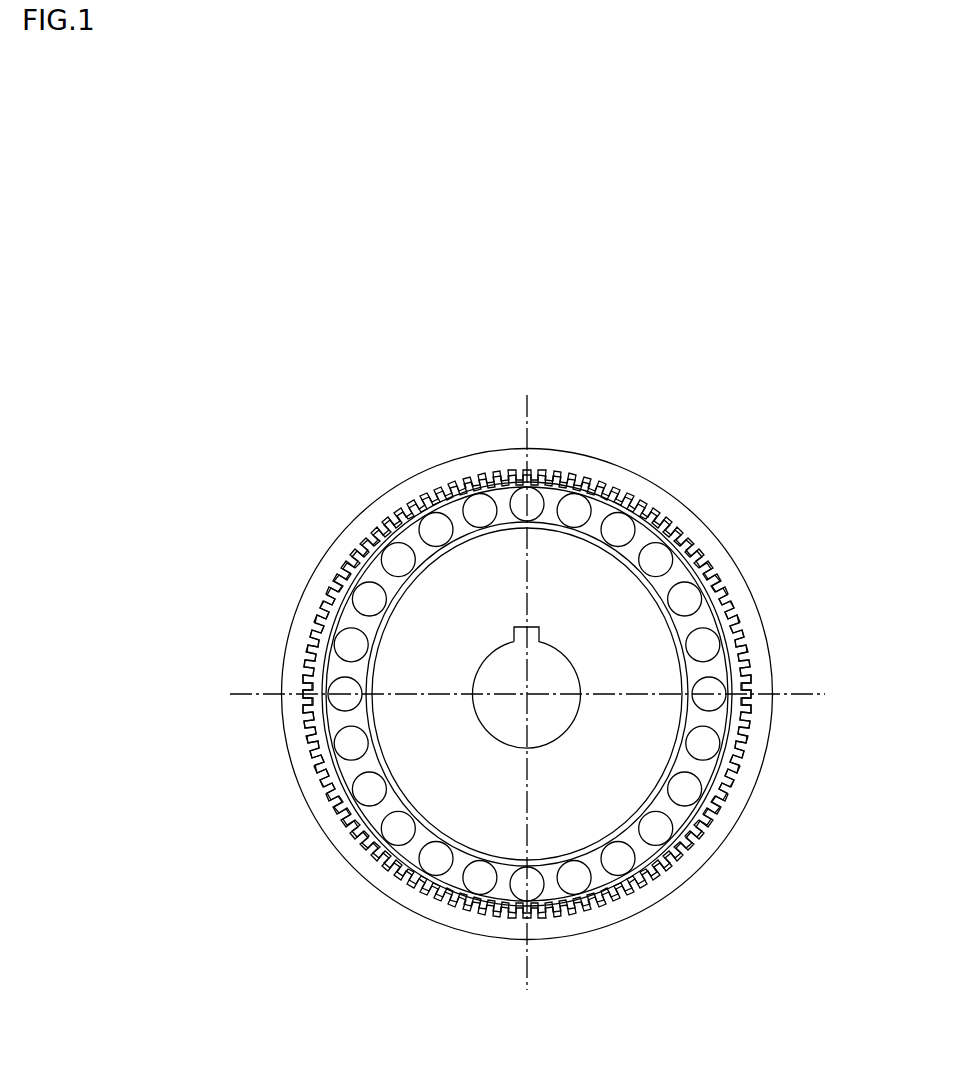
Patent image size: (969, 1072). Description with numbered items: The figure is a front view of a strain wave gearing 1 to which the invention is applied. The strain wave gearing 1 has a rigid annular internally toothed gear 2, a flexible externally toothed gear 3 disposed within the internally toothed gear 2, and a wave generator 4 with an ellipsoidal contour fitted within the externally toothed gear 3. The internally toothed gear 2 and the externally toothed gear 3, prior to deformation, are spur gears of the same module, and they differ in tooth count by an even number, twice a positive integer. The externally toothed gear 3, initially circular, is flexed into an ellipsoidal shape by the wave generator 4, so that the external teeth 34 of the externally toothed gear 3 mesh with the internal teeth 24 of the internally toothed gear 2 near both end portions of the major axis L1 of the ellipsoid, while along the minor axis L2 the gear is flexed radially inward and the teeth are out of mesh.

The strain wave gearing 1 is at (714, 456).
The rigid annular internally toothed gear 2 is at (738, 583).
The flexible externally toothed gear 3 is at (743, 633).
The wave generator 4 is at (673, 714).
The internal teeth 24 is at (700, 553).
The external teeth 34 is at (715, 573).
The major axis L1 is at (527, 582).
The minor axis L2 is at (410, 697).